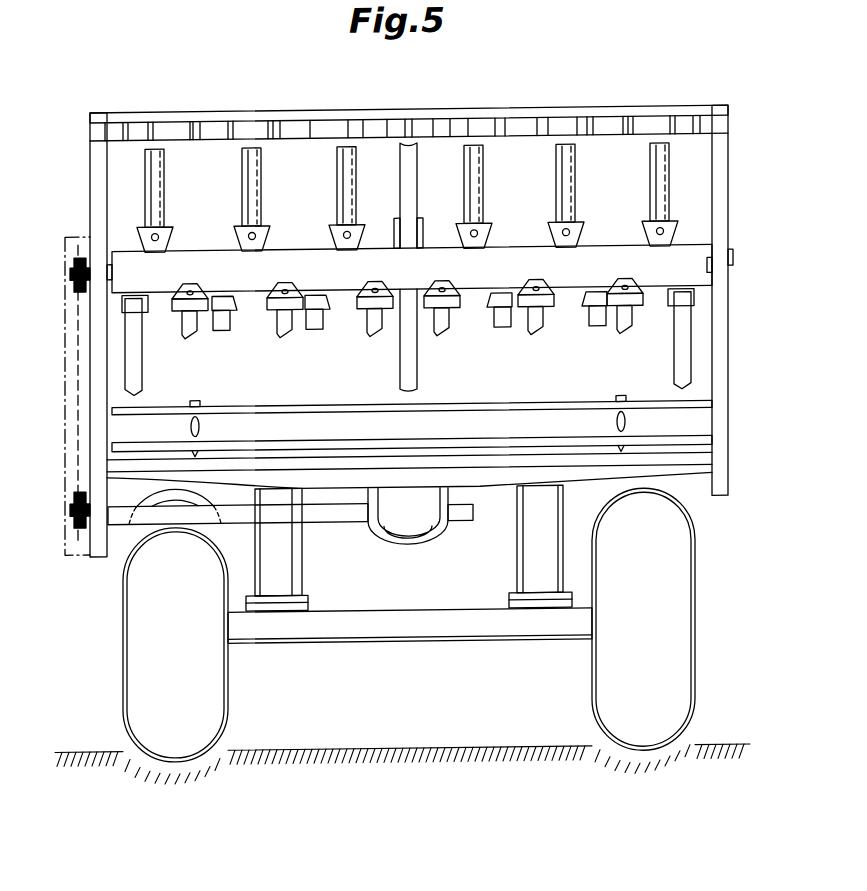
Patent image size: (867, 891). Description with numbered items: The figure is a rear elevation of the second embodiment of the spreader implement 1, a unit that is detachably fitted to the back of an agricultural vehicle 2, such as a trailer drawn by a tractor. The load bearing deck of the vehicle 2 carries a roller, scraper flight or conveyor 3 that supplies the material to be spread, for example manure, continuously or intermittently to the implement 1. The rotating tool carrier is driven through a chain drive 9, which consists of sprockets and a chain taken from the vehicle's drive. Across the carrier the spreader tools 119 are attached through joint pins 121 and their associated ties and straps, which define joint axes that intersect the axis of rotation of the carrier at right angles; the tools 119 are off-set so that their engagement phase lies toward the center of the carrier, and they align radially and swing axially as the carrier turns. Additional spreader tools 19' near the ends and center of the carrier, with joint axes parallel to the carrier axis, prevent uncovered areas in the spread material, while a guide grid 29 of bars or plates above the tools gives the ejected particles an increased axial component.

The spreader implement 1 is at (734, 170).
The agricultural vehicle 2 is at (697, 503).
The conveyor 3 is at (538, 442).
The chain drive 9 is at (60, 433).
The additional spreader tools 19' is at (408, 342).
The guide grid 29 is at (214, 138).
The spreader tools 119 is at (256, 210).
The joint pins 121 is at (570, 238).